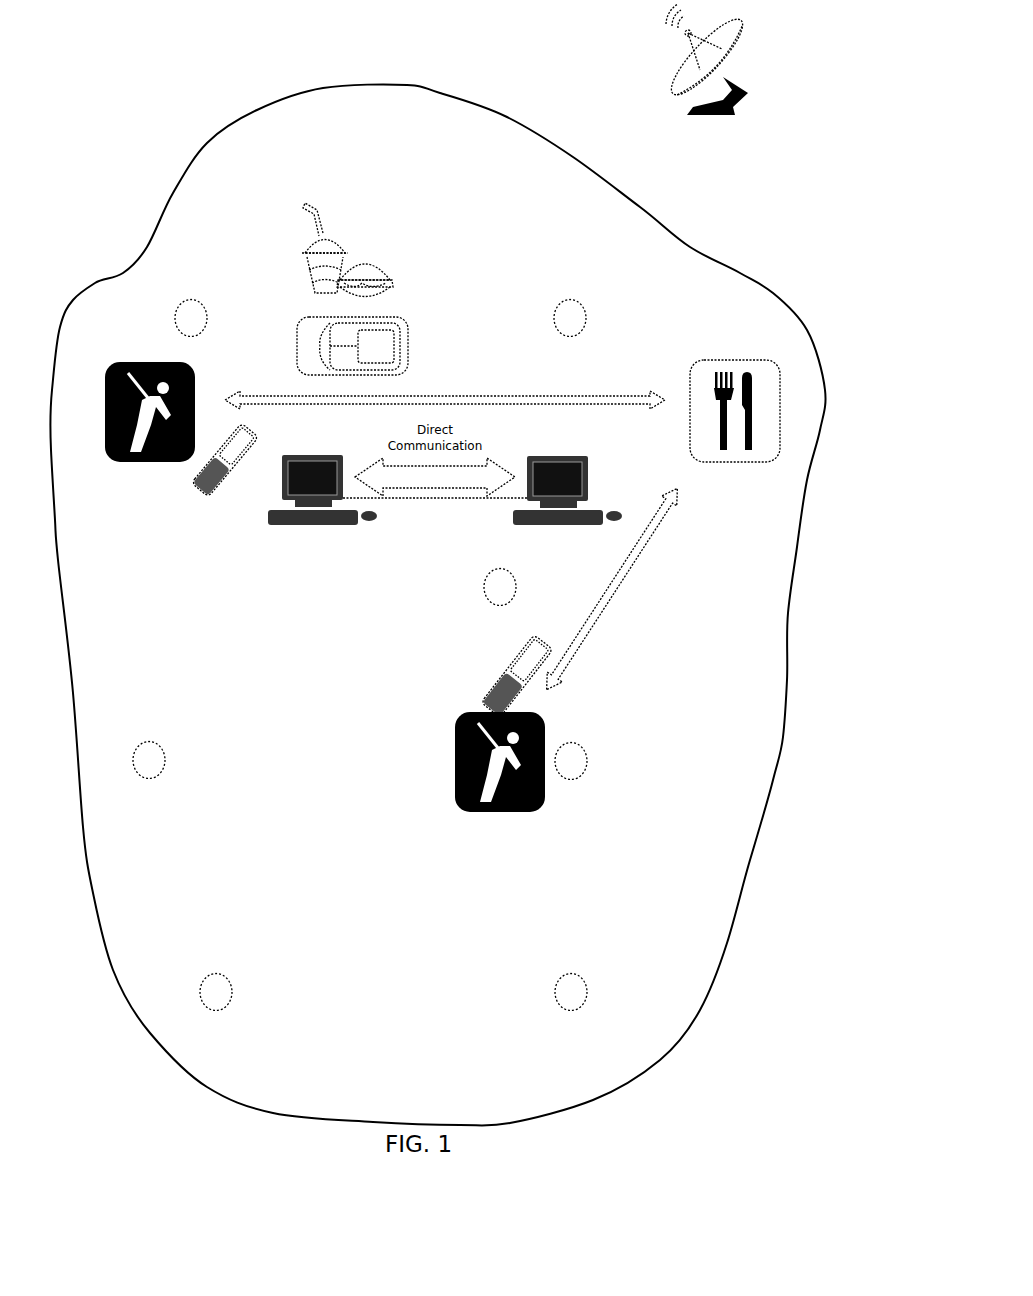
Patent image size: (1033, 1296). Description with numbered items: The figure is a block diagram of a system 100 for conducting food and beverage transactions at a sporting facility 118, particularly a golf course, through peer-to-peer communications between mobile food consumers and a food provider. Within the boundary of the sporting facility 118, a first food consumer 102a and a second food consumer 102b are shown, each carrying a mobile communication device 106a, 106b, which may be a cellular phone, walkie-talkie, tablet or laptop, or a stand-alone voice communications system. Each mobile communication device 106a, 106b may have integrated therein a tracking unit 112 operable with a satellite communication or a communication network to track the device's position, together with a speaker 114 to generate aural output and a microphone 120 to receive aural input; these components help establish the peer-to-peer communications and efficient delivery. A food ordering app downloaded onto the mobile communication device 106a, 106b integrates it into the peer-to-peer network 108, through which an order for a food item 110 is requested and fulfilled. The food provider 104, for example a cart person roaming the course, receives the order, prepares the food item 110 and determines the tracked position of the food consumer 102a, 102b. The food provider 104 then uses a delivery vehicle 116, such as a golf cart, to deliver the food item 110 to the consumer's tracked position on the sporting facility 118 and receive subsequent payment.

The system 100 is at (166, 146).
The food consumer 102a is at (125, 463).
The food consumer 102b is at (490, 813).
The food provider 104 is at (747, 362).
The mobile communication device 106a is at (200, 487).
The mobile communication device 106b is at (498, 689).
The peer-to-peer network 108 is at (440, 498).
The food item 110 is at (362, 262).
The tracking unit 112 is at (690, 83).
The speaker 114 is at (233, 447).
The delivery vehicle 116 is at (408, 335).
The sporting facility 118 is at (725, 928).
The microphone 120 is at (523, 652).